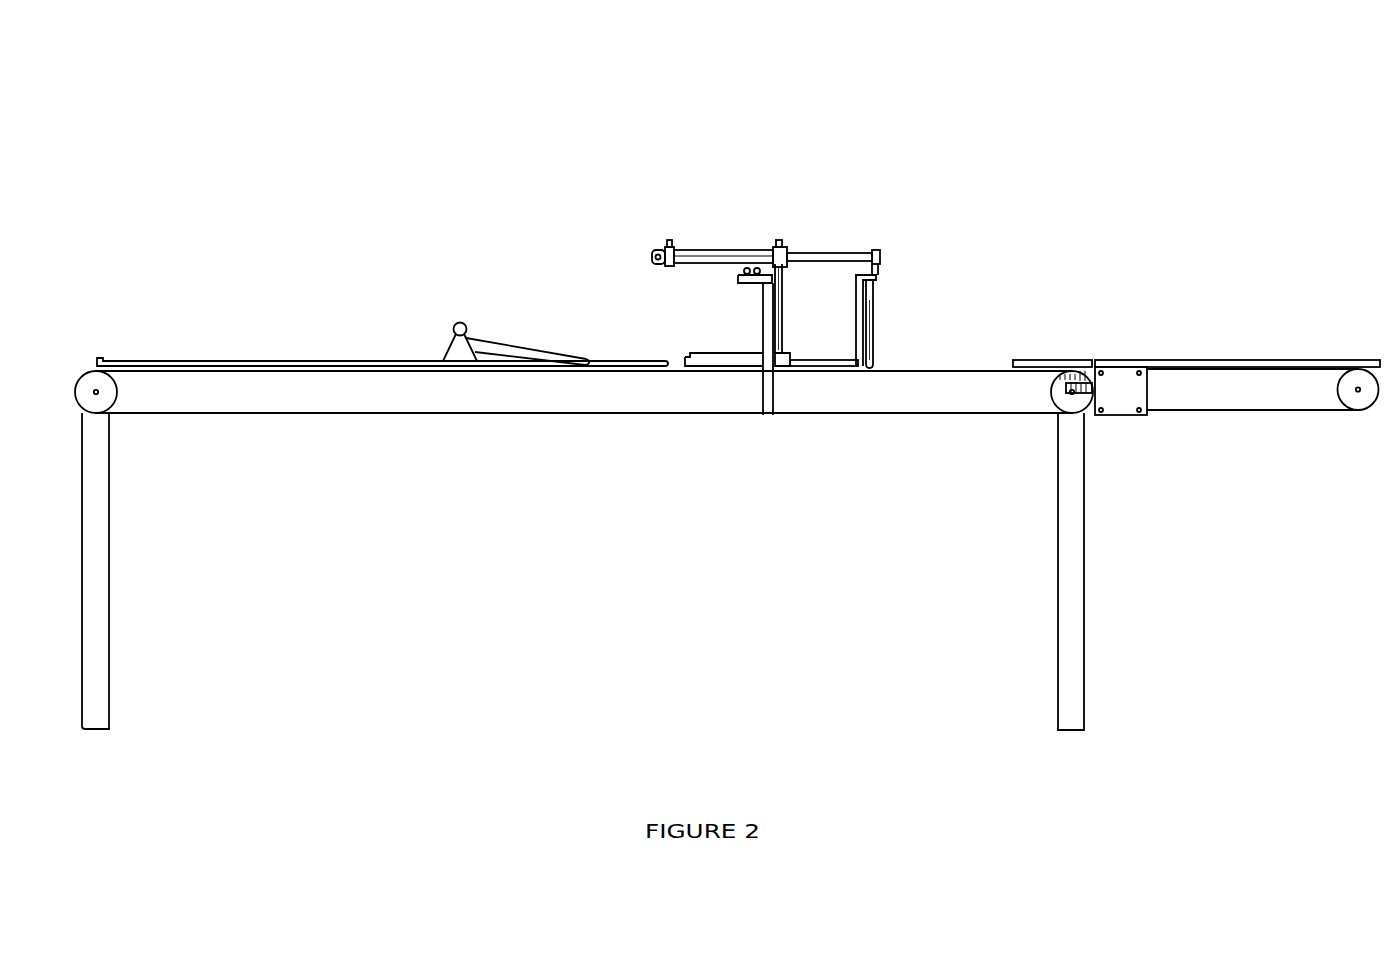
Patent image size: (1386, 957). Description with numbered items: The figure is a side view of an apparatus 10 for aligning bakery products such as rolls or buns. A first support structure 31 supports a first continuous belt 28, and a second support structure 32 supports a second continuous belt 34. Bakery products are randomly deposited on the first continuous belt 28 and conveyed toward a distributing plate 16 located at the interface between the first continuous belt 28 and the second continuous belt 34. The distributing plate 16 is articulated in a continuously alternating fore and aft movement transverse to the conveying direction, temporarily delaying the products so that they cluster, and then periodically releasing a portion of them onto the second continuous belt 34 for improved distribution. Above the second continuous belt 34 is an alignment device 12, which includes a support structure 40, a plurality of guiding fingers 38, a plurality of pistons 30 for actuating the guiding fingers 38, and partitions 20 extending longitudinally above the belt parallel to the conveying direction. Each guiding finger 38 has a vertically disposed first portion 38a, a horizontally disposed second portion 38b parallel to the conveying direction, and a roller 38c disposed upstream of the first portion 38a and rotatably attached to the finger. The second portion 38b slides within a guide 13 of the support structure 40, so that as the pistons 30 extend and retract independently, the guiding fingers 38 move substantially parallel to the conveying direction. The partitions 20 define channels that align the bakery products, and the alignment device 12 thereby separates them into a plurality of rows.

The apparatus 10 is at (966, 158).
The alignment device 12 is at (679, 181).
The guide 13 is at (720, 360).
The distributing plate 16 is at (1033, 360).
The partitions 20 is at (295, 362).
The first continuous belt 28 is at (1292, 358).
The pistons 30 is at (827, 250).
The first support structure 31 is at (1188, 400).
The second support structure 32 is at (1072, 520).
The second continuous belt 34 is at (857, 400).
The guiding fingers 38 is at (793, 368).
The first portion 38a is at (862, 310).
The second portion 38b is at (820, 366).
The roller 38c is at (878, 330).
The support structure 40 is at (762, 327).